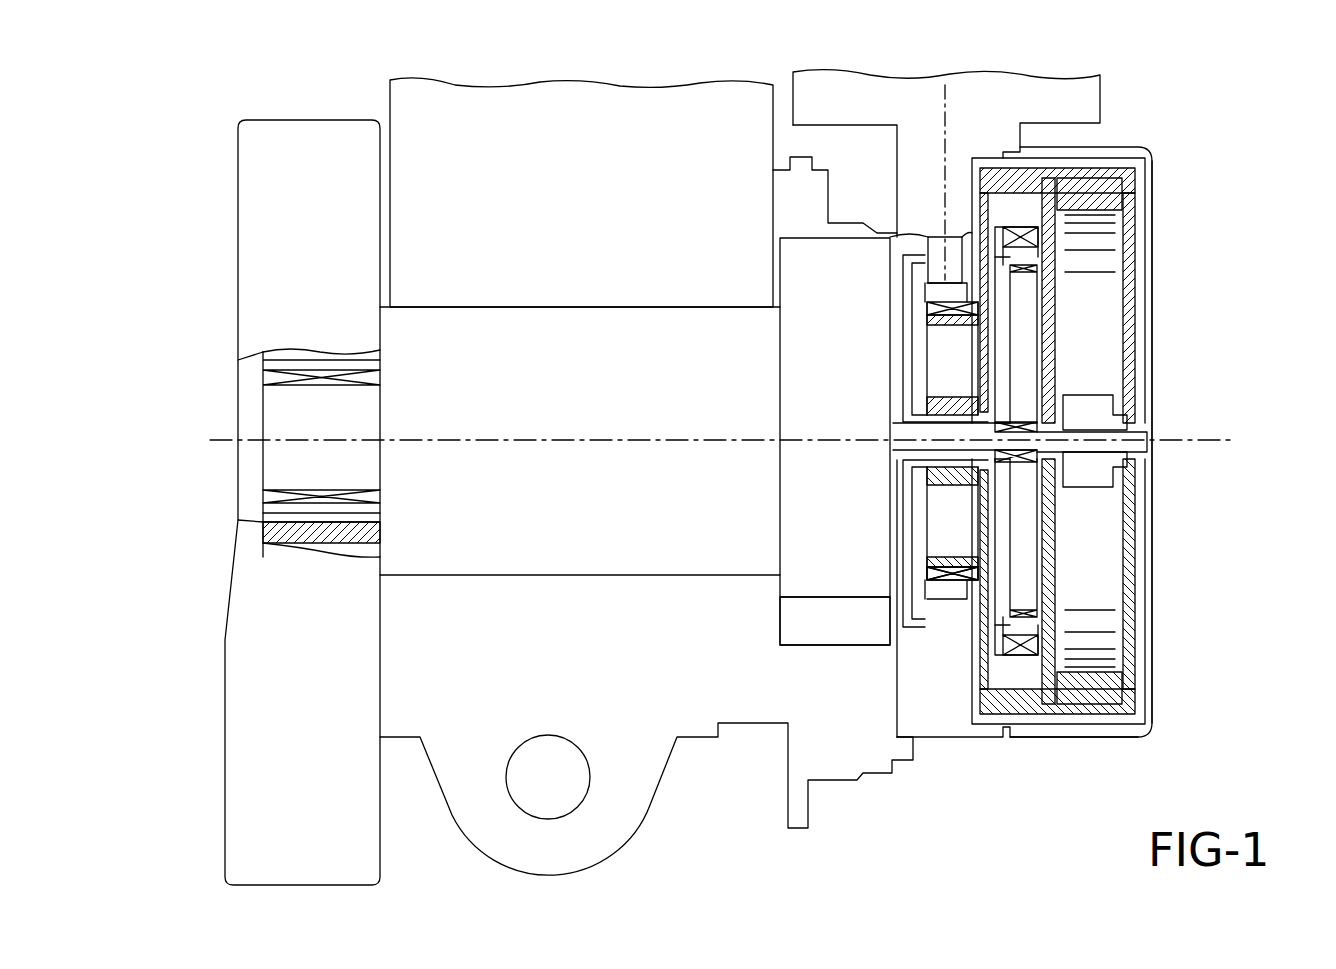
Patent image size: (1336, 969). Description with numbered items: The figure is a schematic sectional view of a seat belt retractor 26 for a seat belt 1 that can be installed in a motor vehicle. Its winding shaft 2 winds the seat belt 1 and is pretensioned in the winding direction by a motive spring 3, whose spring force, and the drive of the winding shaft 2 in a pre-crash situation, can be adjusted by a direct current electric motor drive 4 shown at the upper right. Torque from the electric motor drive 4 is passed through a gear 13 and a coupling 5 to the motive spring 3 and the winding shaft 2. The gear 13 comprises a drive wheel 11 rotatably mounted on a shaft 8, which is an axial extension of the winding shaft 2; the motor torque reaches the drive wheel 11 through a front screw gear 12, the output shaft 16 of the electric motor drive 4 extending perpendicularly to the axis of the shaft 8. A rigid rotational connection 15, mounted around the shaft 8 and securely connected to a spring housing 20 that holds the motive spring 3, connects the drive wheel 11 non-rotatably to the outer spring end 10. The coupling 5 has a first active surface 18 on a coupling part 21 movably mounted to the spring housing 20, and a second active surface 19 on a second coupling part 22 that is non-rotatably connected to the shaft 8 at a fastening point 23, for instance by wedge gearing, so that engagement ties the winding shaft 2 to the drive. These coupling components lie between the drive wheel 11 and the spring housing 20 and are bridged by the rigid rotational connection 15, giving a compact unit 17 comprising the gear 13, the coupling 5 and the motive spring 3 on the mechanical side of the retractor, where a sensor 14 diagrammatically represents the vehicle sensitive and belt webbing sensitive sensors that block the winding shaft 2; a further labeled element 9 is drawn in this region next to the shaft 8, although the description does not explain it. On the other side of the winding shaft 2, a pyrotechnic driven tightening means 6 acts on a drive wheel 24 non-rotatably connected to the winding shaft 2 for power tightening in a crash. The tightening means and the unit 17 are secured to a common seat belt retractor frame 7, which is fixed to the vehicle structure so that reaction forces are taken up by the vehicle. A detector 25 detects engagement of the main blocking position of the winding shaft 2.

The seat belt 1 is at (551, 124).
The winding shaft 2 is at (410, 560).
The motive spring 3 is at (1087, 323).
The electric motor drive 4 is at (1087, 104).
The coupling 5 is at (1030, 250).
The pyrotechnic driven tightening means 6 is at (250, 763).
The seat belt retractor frame 7 is at (673, 707).
The shaft 8 is at (968, 453).
The block 9 is at (1095, 413).
The outer spring end 10 is at (1090, 207).
The drive wheel 11 is at (967, 578).
The front screw gear 12 is at (955, 298).
The gear 13 is at (917, 235).
The sensor 14 is at (793, 580).
The rigid rotational connection 15 is at (1025, 180).
The output shaft 16 is at (938, 236).
The unit 17 is at (1035, 760).
The first active surface 18 is at (1030, 266).
The second active surface 19 is at (1090, 233).
The spring housing 20 is at (1048, 598).
The coupling part 21 is at (1022, 298).
The second coupling part 22 is at (1000, 360).
The fastening point 23 is at (1015, 430).
The drive wheel 24 is at (283, 461).
The detector 25 is at (820, 628).
The seat belt retractor 26 is at (1190, 727).